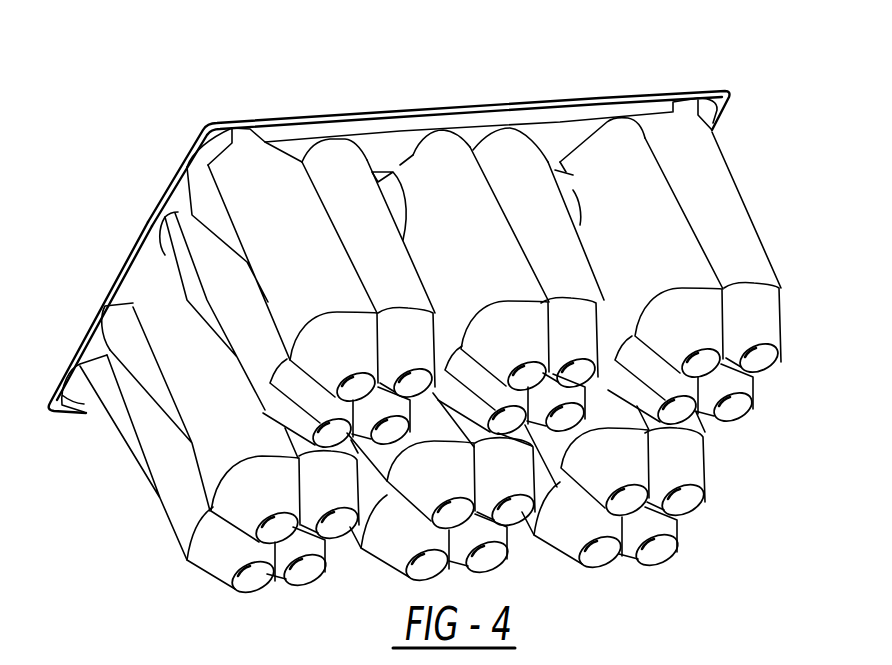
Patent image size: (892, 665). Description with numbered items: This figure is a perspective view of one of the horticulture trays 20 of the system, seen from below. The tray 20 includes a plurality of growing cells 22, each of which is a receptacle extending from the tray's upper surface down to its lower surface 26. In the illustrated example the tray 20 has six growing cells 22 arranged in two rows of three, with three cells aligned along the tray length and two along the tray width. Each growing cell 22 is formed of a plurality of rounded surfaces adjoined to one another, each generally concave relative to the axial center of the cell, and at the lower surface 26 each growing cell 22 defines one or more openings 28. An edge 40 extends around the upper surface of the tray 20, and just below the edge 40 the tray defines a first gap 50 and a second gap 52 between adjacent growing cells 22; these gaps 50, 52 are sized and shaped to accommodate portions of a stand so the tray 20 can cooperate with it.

The horticulture tray 20 is at (94, 225).
The growing cell 22 is at (284, 221).
The lower surface 26 is at (782, 355).
The opening 28 is at (740, 405).
The edge 40 is at (727, 92).
The first gap 50 is at (396, 204).
The second gap 52 is at (572, 193).